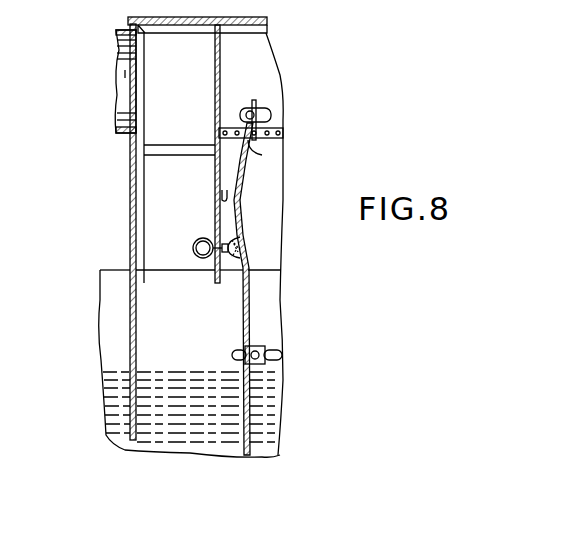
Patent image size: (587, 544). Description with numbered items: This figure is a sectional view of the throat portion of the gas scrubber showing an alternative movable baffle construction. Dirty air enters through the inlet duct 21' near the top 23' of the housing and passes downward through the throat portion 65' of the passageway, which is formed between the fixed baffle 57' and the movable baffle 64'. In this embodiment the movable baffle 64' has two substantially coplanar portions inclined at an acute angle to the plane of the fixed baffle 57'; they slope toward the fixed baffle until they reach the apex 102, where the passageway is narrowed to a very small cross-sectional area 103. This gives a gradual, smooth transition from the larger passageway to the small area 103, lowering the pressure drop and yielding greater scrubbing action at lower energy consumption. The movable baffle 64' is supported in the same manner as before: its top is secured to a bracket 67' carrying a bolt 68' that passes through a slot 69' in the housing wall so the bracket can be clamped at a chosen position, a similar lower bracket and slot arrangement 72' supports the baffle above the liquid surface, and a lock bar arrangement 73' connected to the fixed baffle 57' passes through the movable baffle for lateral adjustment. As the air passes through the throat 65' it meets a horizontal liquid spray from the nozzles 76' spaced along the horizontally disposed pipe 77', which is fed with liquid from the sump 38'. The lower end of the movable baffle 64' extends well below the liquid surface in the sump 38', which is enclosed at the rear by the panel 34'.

The air inlet duct 21' is at (99, 69).
The top 23' is at (222, 227).
The panel 34' is at (103, 232).
The sump 38' is at (189, 382).
The fixed baffle 57' is at (190, 154).
The movable baffle 64' is at (288, 294).
The throat portion 65' is at (280, 289).
The bracket 67' is at (247, 102).
The bolt 68' is at (287, 152).
The slot 69' is at (283, 109).
The bracket and slot arrangement 72' is at (279, 343).
The lock bar arrangement 73' is at (275, 131).
The nozzles 76' is at (270, 245).
The pipe 77' is at (187, 243).
The apex 102 is at (240, 204).
The cross-sectional area 103 is at (215, 198).